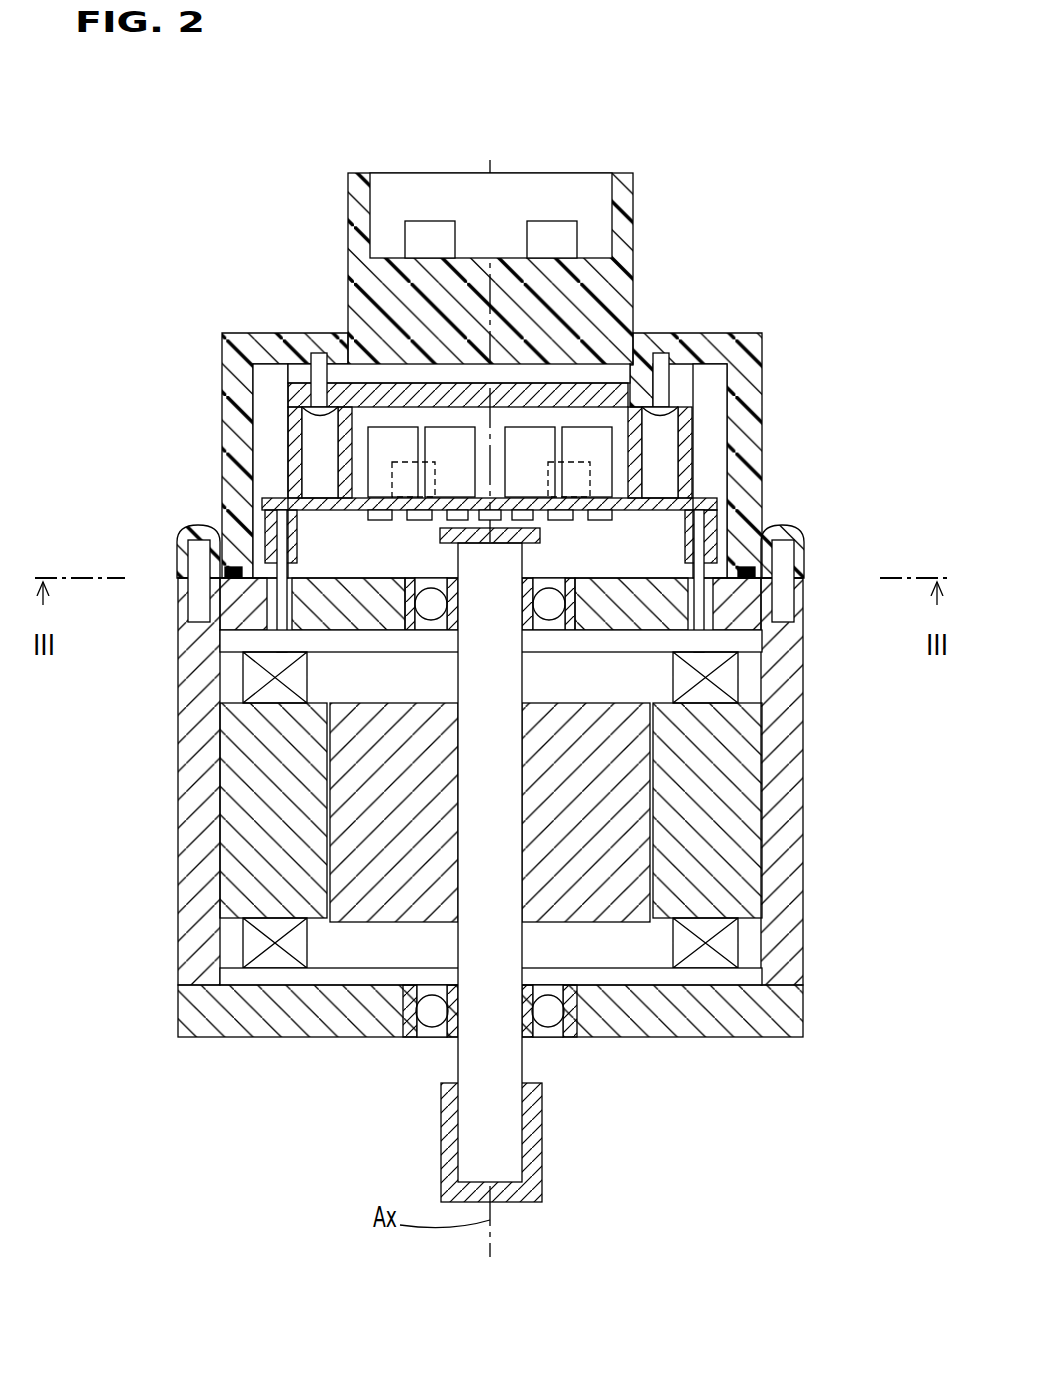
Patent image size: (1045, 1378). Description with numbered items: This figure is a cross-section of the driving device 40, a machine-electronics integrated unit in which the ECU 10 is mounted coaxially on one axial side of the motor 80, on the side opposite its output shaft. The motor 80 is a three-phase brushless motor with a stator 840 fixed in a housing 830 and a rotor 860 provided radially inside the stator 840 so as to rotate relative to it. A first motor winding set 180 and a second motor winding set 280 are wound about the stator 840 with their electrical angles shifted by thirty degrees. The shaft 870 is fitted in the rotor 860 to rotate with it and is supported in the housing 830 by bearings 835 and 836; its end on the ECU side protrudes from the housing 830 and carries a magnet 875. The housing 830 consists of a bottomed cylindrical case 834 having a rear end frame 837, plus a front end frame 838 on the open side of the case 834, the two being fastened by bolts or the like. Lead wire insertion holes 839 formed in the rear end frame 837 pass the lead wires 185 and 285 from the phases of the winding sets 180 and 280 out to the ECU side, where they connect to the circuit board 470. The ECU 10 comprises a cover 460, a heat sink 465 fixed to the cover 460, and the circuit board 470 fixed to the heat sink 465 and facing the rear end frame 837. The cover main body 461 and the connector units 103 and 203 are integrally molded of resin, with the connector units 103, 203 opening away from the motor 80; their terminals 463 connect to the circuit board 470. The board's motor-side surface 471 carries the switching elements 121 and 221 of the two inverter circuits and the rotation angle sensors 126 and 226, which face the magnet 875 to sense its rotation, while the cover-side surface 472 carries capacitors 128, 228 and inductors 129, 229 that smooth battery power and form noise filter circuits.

The driving device 40 is at (214, 170).
The ECU 10 is at (205, 333).
The motor 80 is at (165, 950).
The connector unit 103 is at (415, 238).
The connector unit 203 is at (415, 238).
The terminals 463 is at (427, 220).
The cover main body 461 is at (225, 373).
The cover 460 is at (768, 354).
The heat sink 465 is at (686, 400).
The circuit board 470 is at (717, 503).
The capacitor 128 is at (368, 457).
The capacitor 228 is at (617, 443).
The inductor 129 is at (392, 470).
The inductor 229 is at (592, 470).
The switching elements 121 is at (263, 505).
The cover-side surface 472 is at (604, 515).
The magnet 875 is at (280, 535).
The motor-side surface 471 is at (805, 533).
The rotation angle sensor 126 is at (417, 573).
The rotation angle sensor 226 is at (232, 570).
The switching elements 221 is at (755, 562).
The rear end frame 837 is at (335, 598).
The lead wire insertion holes 839 is at (283, 600).
The bearing 835 is at (560, 608).
The lead wire 185 is at (252, 680).
The first motor winding set 180 is at (408, 682).
The second motor winding set 280 is at (280, 640).
The lead wire 285 is at (705, 640).
The rotor 860 is at (615, 785).
The stator 840 is at (247, 860).
The shaft 870 is at (515, 855).
The case 834 is at (778, 922).
The housing 830 is at (888, 908).
The front end frame 838 is at (778, 1005).
The bearing 836 is at (552, 1014).